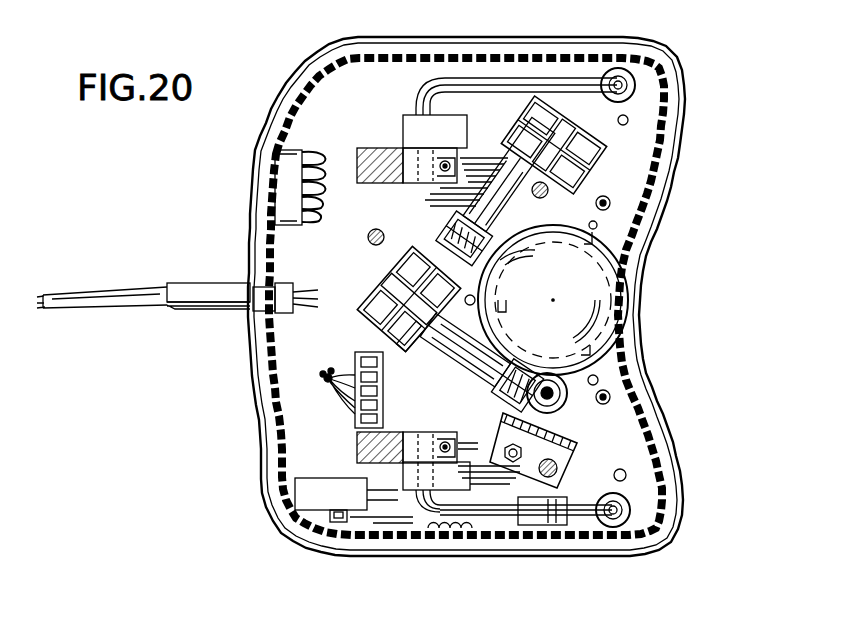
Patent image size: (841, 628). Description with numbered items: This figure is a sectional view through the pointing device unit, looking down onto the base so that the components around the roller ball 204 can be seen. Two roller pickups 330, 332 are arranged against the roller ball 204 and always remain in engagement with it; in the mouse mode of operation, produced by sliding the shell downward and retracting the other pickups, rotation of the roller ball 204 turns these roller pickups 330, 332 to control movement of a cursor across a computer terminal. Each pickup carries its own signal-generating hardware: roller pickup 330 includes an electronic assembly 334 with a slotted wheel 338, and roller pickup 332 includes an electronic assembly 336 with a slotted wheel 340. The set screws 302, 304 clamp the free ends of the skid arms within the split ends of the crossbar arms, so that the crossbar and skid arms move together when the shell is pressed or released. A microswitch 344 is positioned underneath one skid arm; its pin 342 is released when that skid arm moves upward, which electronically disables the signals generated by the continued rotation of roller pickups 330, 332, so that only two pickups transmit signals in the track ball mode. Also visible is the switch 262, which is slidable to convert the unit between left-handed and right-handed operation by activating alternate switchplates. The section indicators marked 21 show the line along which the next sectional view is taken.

The section line 21- 21 is at (90, 255).
The roller ball 204 is at (600, 283).
The switch 262 is at (307, 543).
The set screw 302 is at (403, 143).
The set screw 304 is at (405, 497).
The roller pickup 330 is at (445, 223).
The roller pickup 332 is at (485, 380).
The electronic assembly 334 is at (608, 142).
The electronic assembly 336 is at (363, 307).
The slotted wheel 338 is at (528, 140).
The slotted wheel 340 is at (368, 328).
The pin 342 is at (560, 540).
The microswitch 344 is at (535, 523).